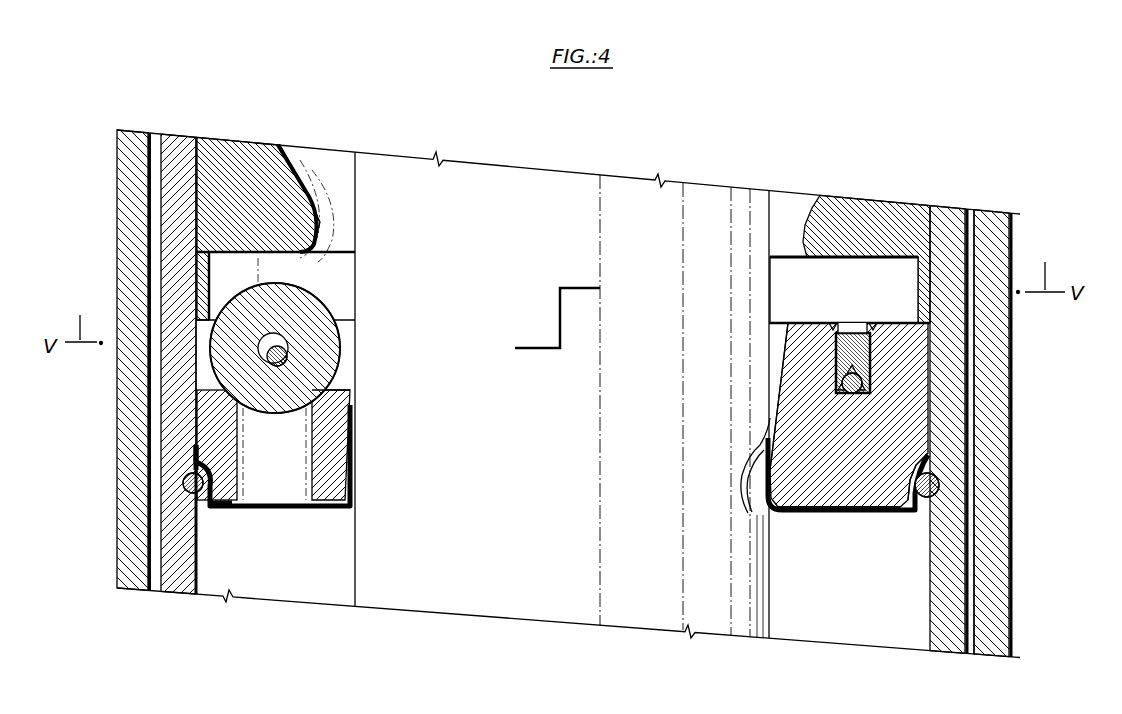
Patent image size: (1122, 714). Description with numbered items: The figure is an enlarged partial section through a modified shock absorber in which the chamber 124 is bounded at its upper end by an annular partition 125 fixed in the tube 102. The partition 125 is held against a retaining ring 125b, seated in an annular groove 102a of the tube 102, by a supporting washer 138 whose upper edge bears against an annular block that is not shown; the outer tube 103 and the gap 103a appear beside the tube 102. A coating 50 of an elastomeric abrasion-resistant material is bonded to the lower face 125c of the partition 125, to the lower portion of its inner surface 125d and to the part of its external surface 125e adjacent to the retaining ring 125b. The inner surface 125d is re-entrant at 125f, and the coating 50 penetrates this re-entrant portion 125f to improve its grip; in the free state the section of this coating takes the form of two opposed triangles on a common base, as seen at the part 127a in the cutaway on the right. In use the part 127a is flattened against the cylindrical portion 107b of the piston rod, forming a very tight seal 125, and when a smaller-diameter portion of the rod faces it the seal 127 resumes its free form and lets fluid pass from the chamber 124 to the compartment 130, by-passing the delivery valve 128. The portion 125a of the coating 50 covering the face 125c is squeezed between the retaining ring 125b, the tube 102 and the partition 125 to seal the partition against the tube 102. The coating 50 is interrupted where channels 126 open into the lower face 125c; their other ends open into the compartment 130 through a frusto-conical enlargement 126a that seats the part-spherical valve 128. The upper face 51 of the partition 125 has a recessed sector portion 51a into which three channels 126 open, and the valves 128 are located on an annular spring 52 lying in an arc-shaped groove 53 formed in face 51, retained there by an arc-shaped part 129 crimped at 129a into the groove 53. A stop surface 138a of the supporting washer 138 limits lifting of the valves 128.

The coating 50 is at (225, 510).
The upper face 51 is at (811, 322).
The recessed sector portion 51a is at (322, 406).
The annular spring 52 is at (258, 340).
The groove 53 is at (873, 372).
The tube 102 is at (181, 597).
The annular groove 102a is at (938, 487).
The outer tube 103 is at (133, 557).
The annular gap 103a is at (151, 592).
The cylindrical portion of the piston rod 107b is at (600, 210).
The chamber 124 is at (293, 590).
The annular partition 125 is at (210, 425).
The portion of the elastic coating 125a is at (197, 468).
The retaining ring 125b is at (184, 484).
The lower face 125c is at (840, 510).
The inner surface 125d is at (782, 428).
The external surface 125e is at (898, 468).
The re-entrant portion 125f is at (790, 468).
The channels 126 is at (297, 487).
The frusto-conical enlargement 126a is at (318, 396).
The seal 127 is at (353, 456).
The part of the elastic coating 127a is at (758, 474).
The delivery valve 128 is at (268, 352).
The part 129 is at (860, 355).
The crimped region 129a is at (873, 326).
The compartment 130 is at (345, 283).
The supporting washer 138 is at (217, 145).
The stop surface 138a is at (290, 247).